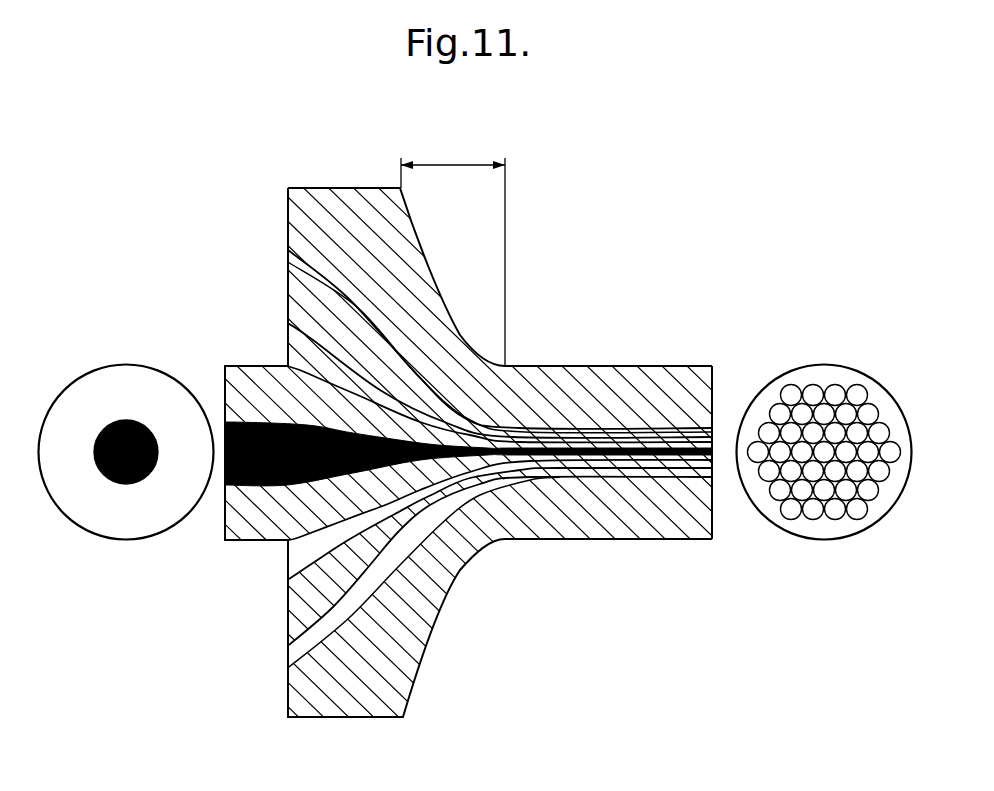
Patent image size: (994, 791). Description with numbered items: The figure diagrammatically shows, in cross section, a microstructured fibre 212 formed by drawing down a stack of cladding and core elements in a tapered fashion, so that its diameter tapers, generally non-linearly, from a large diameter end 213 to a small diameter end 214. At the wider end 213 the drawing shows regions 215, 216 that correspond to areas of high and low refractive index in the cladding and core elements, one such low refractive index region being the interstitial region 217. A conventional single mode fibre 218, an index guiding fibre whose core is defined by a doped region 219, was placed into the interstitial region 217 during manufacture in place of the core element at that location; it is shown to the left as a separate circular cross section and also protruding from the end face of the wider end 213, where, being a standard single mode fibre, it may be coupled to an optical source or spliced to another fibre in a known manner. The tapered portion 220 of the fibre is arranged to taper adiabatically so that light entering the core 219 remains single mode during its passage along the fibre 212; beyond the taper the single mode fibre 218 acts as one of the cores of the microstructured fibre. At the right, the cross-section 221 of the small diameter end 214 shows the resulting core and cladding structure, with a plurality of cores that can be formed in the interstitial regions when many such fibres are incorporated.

The fibre 212 is at (596, 272).
The large diameter end 213 is at (287, 180).
The small diameter end 214 is at (713, 362).
The region 215 is at (284, 303).
The region 216 is at (287, 248).
The interstitial region 217 is at (293, 563).
The single mode fibre 218 is at (125, 352).
The doped region 219 is at (110, 435).
The tapered portion 220 is at (452, 163).
The cross-section of the end 221 is at (865, 372).